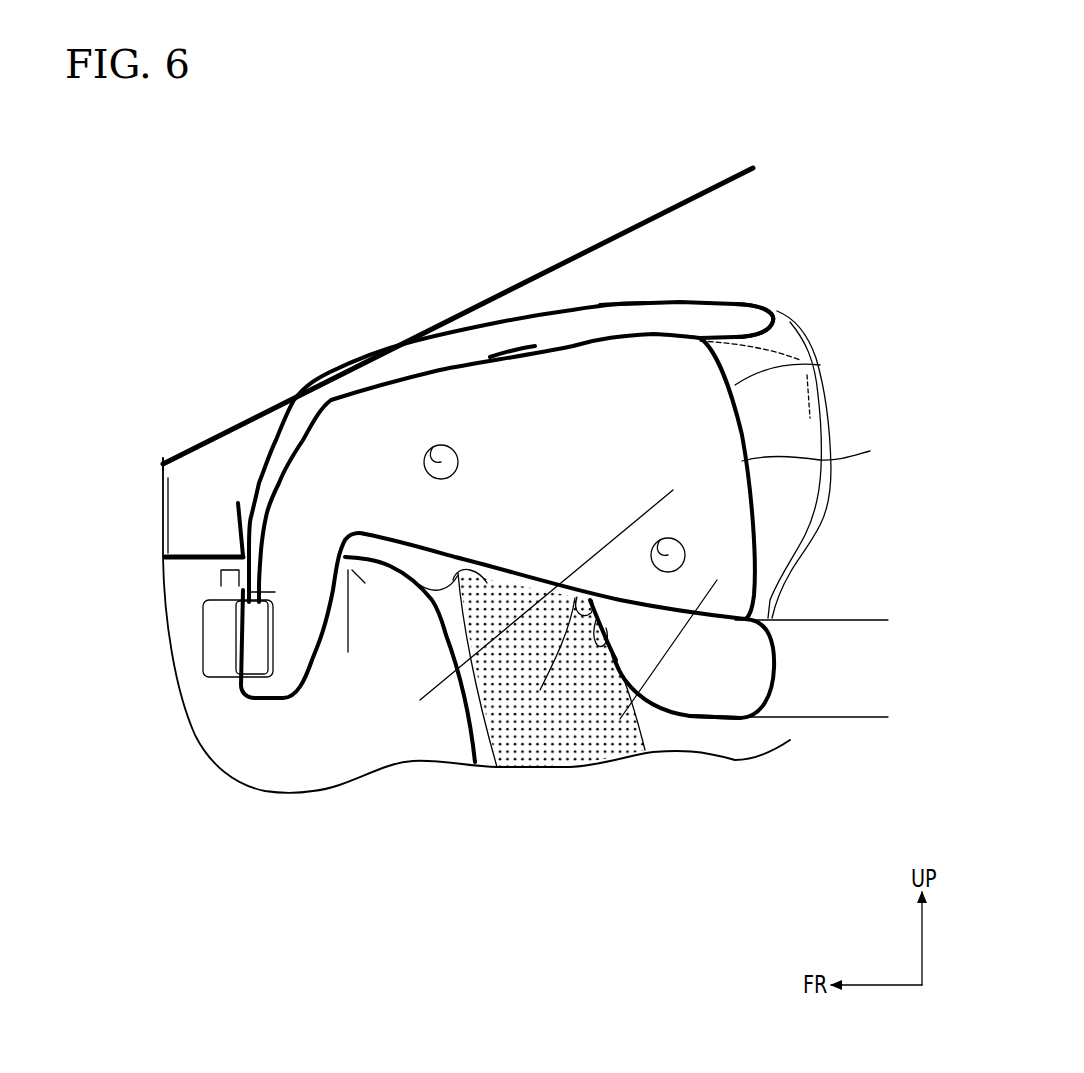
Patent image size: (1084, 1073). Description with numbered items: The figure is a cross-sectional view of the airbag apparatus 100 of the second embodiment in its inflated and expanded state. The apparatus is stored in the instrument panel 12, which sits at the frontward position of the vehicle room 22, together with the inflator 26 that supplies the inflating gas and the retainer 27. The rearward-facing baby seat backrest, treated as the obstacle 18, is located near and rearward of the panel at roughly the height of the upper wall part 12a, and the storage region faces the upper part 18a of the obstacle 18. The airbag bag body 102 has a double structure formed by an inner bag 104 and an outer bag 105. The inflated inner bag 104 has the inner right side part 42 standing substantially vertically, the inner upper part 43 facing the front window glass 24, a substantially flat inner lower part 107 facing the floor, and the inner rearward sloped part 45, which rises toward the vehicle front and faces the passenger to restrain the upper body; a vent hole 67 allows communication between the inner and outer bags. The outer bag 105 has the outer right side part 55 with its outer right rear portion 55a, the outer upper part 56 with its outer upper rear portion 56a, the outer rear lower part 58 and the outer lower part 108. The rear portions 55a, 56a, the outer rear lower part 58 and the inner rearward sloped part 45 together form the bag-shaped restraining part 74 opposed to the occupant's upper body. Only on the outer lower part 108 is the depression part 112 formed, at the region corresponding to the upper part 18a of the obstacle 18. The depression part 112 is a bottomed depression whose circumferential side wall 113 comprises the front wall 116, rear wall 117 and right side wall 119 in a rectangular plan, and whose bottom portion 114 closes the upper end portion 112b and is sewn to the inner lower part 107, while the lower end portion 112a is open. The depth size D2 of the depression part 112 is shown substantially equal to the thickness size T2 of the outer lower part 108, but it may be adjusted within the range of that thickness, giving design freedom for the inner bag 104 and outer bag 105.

The instrument panel 12 is at (183, 547).
The upper wall part 12a is at (216, 555).
The obstacle 18 is at (500, 730).
The upper part of the obstacle 18a is at (447, 630).
The vehicle room 22 is at (918, 561).
The front window glass 24 is at (413, 327).
The inflator 26 is at (220, 642).
The retainer 27 is at (222, 582).
The inner right side part 42 is at (540, 410).
The inner upper part 43 is at (517, 348).
The inner rearward sloped part 45 is at (795, 478).
The outer right side part 55 is at (820, 365).
The outer right rear portion 55a is at (807, 418).
The outer upper part 56 is at (622, 302).
The outer upper rear portion 56a is at (737, 302).
The outer rear lower part 58 is at (773, 670).
The vent hole 67 is at (424, 461).
The restraining part 74 is at (787, 421).
The airbag apparatus 100 is at (280, 432).
The airbag bag body 102 is at (632, 153).
The inner bag 104 is at (551, 303).
The outer bag 105 is at (652, 328).
The inner lower part 107 is at (672, 620).
The outer lower part 108 is at (703, 722).
The depression part 112 is at (589, 870).
The lower end portion 112a is at (610, 718).
The upper end portion 112b is at (575, 597).
The circumferential side wall 113 is at (610, 672).
The bottom portion 114 is at (540, 690).
The front wall 116 is at (597, 615).
The rear wall 117 is at (493, 570).
The right side wall 119 is at (452, 598).
The depth size D2 is at (708, 580).
The thickness size T2 is at (882, 622).